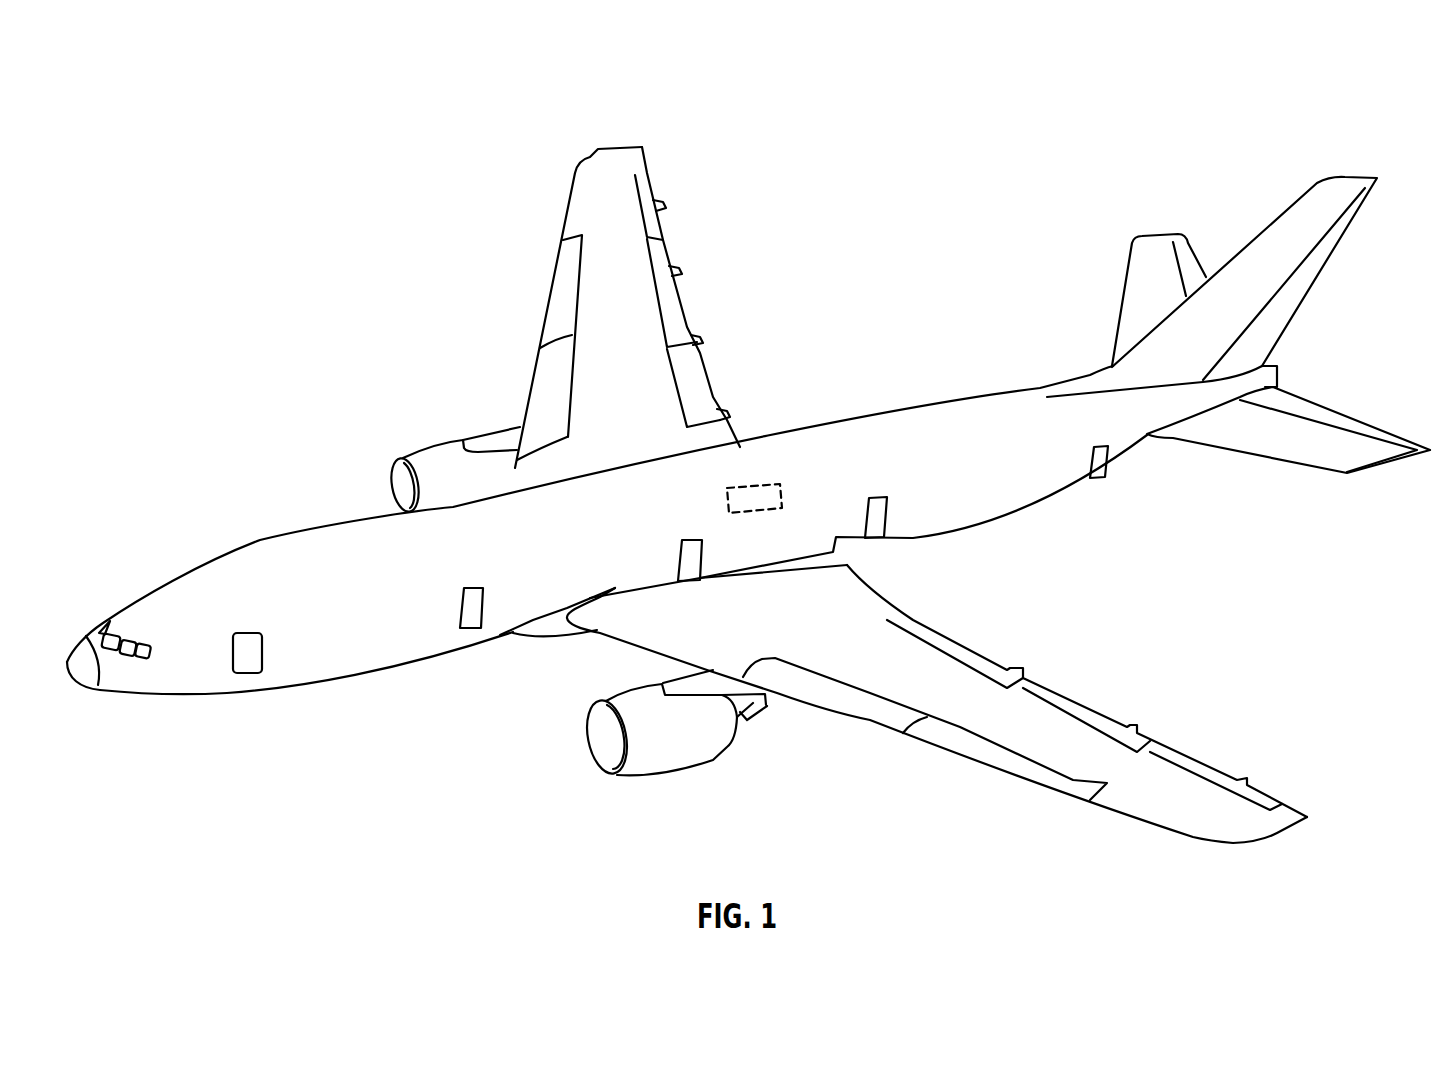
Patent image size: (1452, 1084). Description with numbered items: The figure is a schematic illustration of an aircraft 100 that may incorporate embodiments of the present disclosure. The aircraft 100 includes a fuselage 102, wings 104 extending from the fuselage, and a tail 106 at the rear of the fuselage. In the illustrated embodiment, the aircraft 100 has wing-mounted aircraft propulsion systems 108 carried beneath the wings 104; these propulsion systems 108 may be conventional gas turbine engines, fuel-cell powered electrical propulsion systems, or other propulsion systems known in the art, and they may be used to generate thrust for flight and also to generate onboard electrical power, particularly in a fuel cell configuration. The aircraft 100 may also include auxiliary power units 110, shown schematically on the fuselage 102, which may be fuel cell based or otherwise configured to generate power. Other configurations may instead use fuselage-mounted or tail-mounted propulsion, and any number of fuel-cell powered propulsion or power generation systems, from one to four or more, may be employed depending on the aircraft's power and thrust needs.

The aircraft 100 is at (1331, 108).
The fuselage 102 is at (828, 447).
The wings 104 is at (642, 317).
The tail 106 is at (1263, 377).
The wing-mounted aircraft propulsion systems 108 is at (432, 458).
The auxiliary power units 110 is at (753, 493).